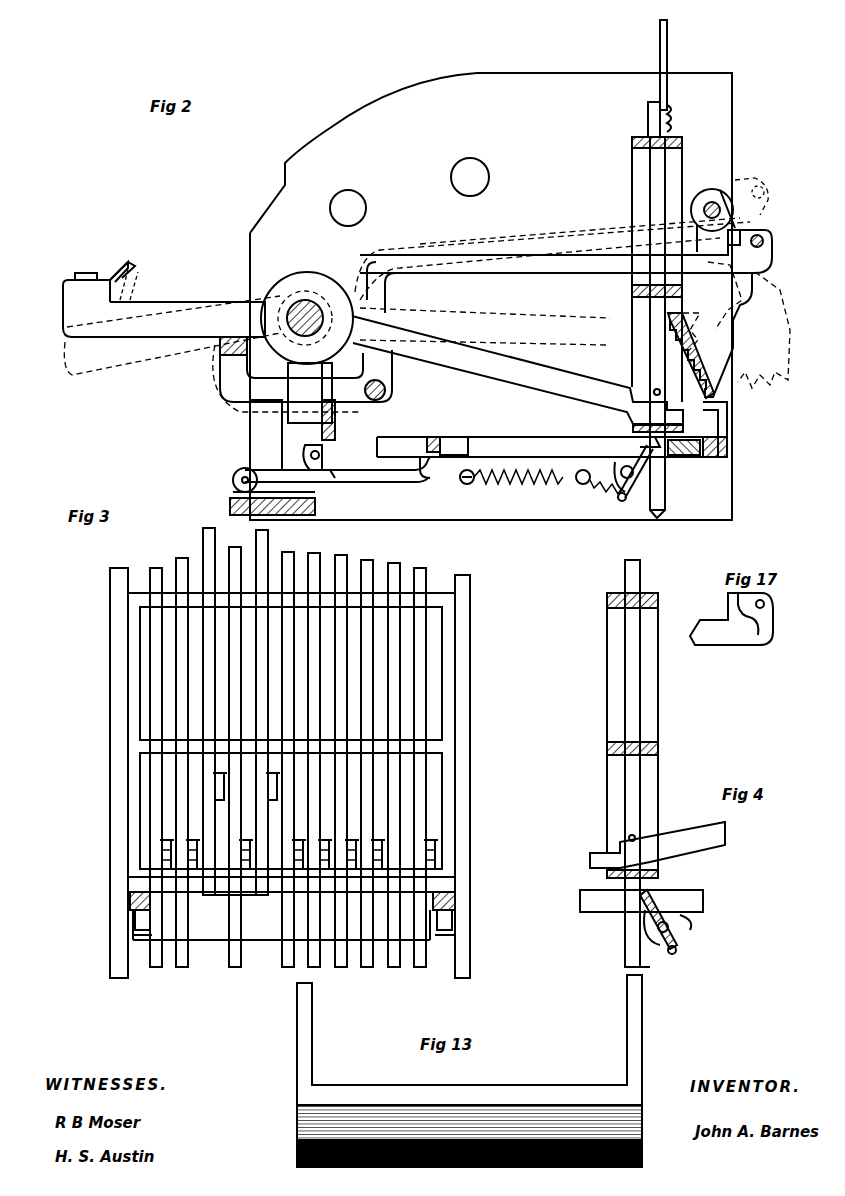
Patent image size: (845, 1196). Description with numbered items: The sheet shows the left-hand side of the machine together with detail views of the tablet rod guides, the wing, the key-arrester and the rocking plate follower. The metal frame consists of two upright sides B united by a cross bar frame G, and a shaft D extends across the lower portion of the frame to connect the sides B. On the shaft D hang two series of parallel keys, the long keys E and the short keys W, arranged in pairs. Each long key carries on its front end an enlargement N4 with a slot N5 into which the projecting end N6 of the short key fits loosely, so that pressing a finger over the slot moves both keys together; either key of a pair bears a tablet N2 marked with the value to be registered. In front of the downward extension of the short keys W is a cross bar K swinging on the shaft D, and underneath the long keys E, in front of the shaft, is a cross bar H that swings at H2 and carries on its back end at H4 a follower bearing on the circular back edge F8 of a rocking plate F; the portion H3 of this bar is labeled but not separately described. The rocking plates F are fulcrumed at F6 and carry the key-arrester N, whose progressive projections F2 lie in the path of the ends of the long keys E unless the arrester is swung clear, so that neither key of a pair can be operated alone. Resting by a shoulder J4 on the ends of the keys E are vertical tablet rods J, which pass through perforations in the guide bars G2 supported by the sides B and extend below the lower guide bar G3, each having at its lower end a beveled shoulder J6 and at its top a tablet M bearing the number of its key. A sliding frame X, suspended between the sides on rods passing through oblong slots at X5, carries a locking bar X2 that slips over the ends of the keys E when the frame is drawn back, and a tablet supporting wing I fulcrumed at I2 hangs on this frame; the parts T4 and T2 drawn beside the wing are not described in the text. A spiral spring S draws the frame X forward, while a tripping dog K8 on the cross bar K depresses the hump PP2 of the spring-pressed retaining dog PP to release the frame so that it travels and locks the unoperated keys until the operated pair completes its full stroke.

In FIG. 2, the upright sides B is at (333, 132).
In FIG. 3, the upright sides B is at (110, 740).
In FIG. 2, the tablet M is at (667, 47).
In FIG. 2, the tablet rods J is at (648, 108).
In FIG. 3, the tablet rods J is at (180, 558).
In FIG. 4, the tablet rods J is at (640, 686).
In FIG. 2, the cross bar frame G is at (632, 173).
In FIG. 3, the cross bar frame G is at (128, 645).
In FIG. 4, the cross bar frame G is at (607, 630).
In FIG. 2, the guide bars G2 is at (632, 291).
In FIG. 3, the guide bars G2 is at (430, 593).
In FIG. 4, the guide bars G2 is at (658, 748).
In FIG. 2, the lower guide bar G3 is at (683, 429).
In FIG. 3, the lower guide bar G3 is at (270, 898).
In FIG. 4, the lower guide bar G3 is at (607, 873).
In FIG. 2, the arm H3 is at (524, 258).
In FIG. 17, the arm H3 is at (720, 645).
In FIG. 2, the back end of cross bar H4 is at (772, 245).
In FIG. 17, the back end of cross bar H4 is at (775, 607).
In FIG. 2, the fulcrum of rocking plate F6 is at (712, 202).
In FIG. 2, the back edge of rocking plate F8 is at (735, 225).
In FIG. 2, the rocking plates F is at (735, 333).
In FIG. 13, the rocking plates F is at (312, 1013).
In FIG. 2, the progressive projections F2 is at (668, 322).
In FIG. 13, the progressive projections F2 is at (297, 1125).
In FIG. 2, the key-arrester N is at (700, 365).
In FIG. 2, the shaft D is at (305, 300).
In FIG. 2, the long keys E is at (152, 338).
In FIG. 3, the long keys E is at (162, 856).
In FIG. 4, the long keys E is at (725, 845).
In FIG. 2, the enlargement N4 is at (63, 284).
In FIG. 2, the slot N5 is at (78, 273).
In FIG. 2, the end of short key N6 is at (108, 278).
In FIG. 2, the tablet N2 is at (133, 271).
In FIG. 2, the cross bar H is at (220, 365).
In FIG. 2, the swing point of cross bar H2 is at (385, 391).
In FIG. 2, the short keys W is at (291, 416).
In FIG. 2, the cross bar K is at (335, 445).
In FIG. 2, the tripping dog K8 is at (306, 450).
In FIG. 2, the hump PP2 is at (340, 478).
In FIG. 2, the retaining dog PP is at (481, 494).
In FIG. 2, the sliding frame X is at (541, 440).
In FIG. 3, the sliding frame X is at (130, 900).
In FIG. 4, the sliding frame X is at (703, 898).
In FIG. 2, the locking bar X2 is at (727, 409).
In FIG. 2, the rods through frame X5 is at (440, 432).
In FIG. 2, the spiral spring S is at (511, 491).
In FIG. 2, the trip spring T4 is at (599, 492).
In FIG. 2, the trip lever T2 is at (633, 480).
In FIG. 2, the shoulder J4 is at (654, 388).
In FIG. 3, the shoulder J4 is at (165, 842).
In FIG. 4, the shoulder J4 is at (629, 836).
In FIG. 2, the tablet supporting wing I is at (645, 447).
In FIG. 3, the tablet supporting wing I is at (212, 940).
In FIG. 4, the tablet supporting wing I is at (655, 905).
In FIG. 4, the fulcrum of wing I2 is at (683, 932).
In FIG. 2, the beveled projecting shoulder J6 is at (657, 518).
In FIG. 4, the beveled projecting shoulder J6 is at (650, 967).